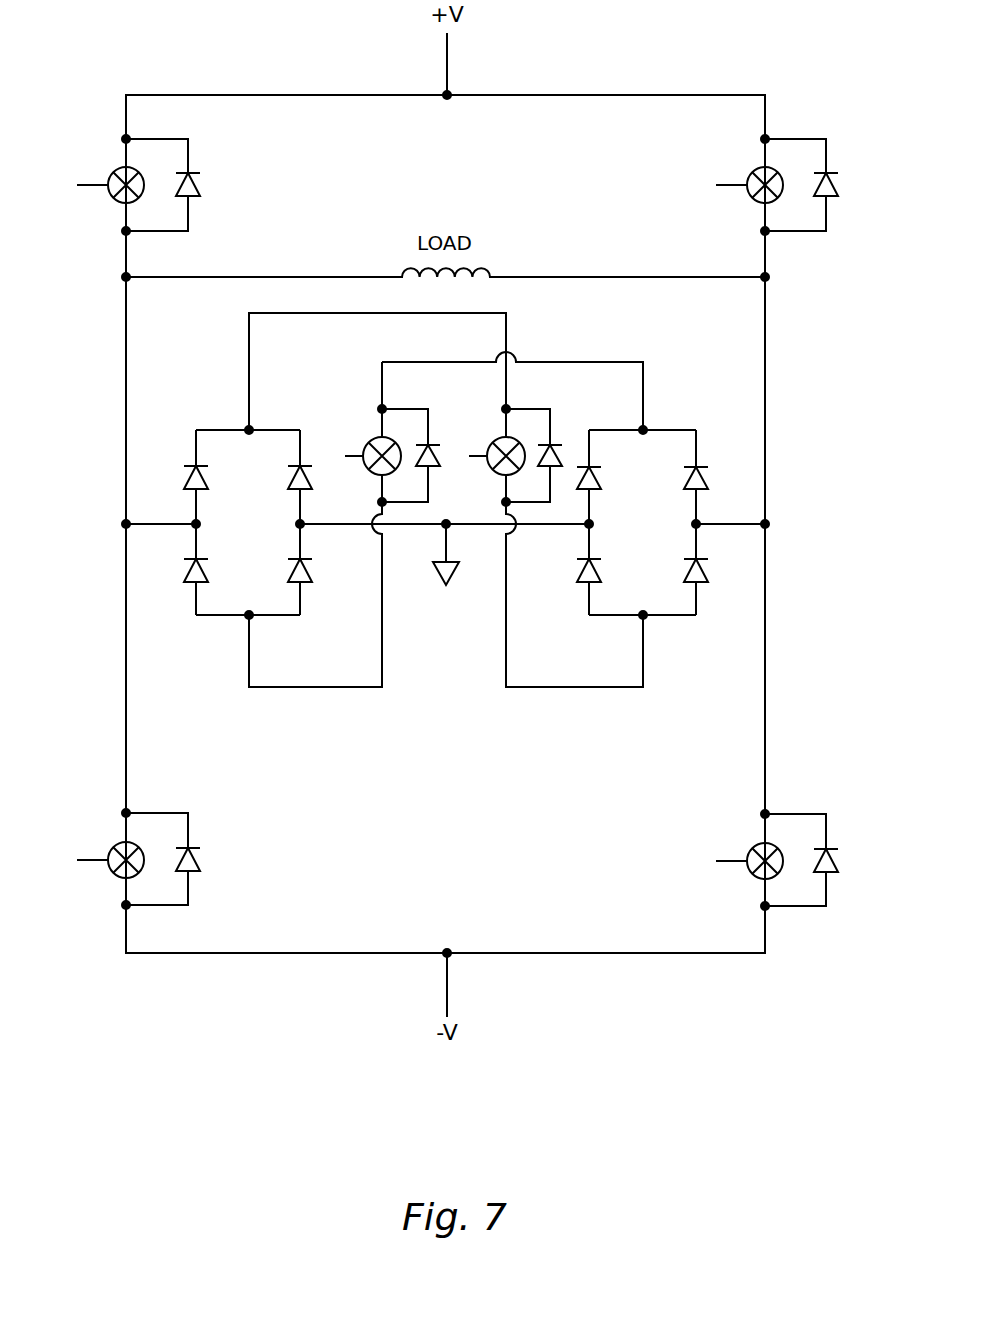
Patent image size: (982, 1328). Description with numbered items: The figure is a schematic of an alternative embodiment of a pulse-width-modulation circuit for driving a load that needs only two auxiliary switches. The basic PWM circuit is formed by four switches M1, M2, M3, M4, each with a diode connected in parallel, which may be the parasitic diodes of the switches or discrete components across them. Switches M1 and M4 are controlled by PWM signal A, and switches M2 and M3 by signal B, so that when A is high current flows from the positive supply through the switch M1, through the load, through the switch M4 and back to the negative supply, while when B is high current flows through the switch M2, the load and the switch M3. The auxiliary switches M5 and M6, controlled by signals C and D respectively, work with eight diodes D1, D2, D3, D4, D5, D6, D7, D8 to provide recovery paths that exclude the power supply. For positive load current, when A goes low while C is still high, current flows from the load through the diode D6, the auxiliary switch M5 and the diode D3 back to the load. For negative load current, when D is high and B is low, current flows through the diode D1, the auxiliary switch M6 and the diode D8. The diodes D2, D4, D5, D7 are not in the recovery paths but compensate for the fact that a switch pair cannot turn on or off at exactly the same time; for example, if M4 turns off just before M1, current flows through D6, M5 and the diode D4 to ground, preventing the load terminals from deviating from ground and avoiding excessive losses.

The switch M1 is at (151, 185).
The switch M2 is at (151, 859).
The switch M3 is at (789, 185).
The switch M4 is at (789, 860).
The auxiliary switch M5 is at (384, 434).
The auxiliary switch M6 is at (507, 455).
The diode D1 is at (181, 477).
The diode D2 is at (282, 477).
The diode D3 is at (181, 569).
The diode D4 is at (282, 569).
The diode D5 is at (607, 477).
The diode D6 is at (714, 477).
The diode D7 is at (607, 569).
The diode D8 is at (714, 569).